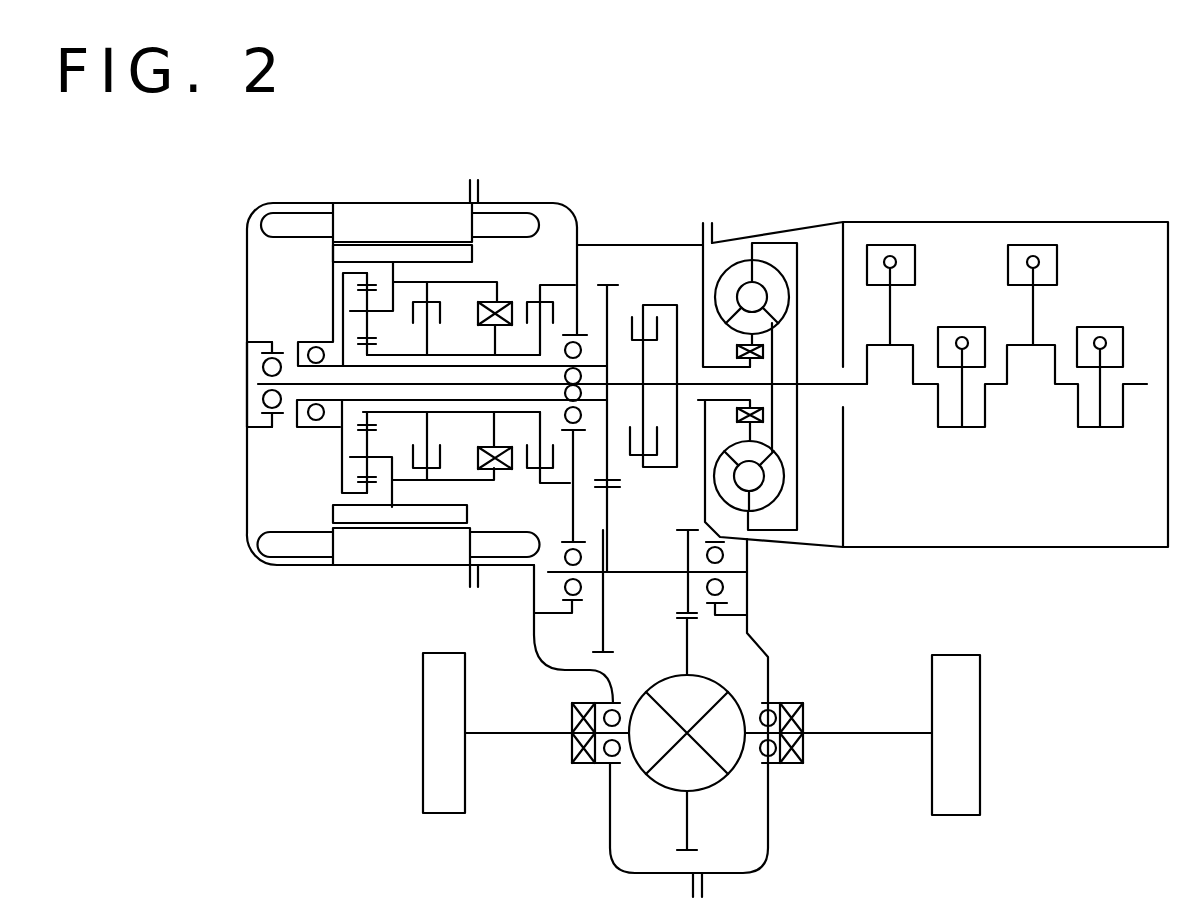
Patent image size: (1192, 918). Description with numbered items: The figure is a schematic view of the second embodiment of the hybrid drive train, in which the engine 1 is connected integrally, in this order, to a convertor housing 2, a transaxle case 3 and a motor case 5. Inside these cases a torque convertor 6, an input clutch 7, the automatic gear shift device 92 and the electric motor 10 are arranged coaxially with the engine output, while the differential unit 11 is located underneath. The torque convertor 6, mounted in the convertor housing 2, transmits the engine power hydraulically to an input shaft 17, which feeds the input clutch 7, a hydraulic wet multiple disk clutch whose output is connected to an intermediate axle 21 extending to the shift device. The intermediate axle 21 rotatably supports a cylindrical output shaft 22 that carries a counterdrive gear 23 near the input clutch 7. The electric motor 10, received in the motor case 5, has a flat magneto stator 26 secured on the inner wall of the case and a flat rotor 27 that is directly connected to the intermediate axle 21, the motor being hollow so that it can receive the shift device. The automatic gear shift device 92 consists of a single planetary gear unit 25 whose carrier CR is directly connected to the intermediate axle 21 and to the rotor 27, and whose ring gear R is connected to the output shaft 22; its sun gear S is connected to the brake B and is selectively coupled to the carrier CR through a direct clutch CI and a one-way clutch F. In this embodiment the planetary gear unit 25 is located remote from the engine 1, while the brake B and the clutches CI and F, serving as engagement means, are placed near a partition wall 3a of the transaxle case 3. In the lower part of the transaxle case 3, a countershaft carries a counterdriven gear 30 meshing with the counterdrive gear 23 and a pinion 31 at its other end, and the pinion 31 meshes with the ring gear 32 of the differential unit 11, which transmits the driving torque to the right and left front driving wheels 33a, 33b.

The engine 1 is at (1033, 210).
The convertor housing 2 is at (822, 226).
The transaxle case 3 is at (628, 244).
The partition wall 3a is at (565, 260).
The motor case 5 is at (294, 202).
The torque convertor 6 is at (735, 244).
The input clutch 7 is at (636, 313).
The automatic gear shift device 92 is at (542, 240).
The electric motor 10 is at (391, 192).
The differential unit 11 is at (745, 682).
The input shaft 17 is at (757, 388).
The intermediate axle 21 is at (312, 383).
The cylindrical output shaft 22 is at (330, 405).
The counterdrive gear 23 is at (608, 465).
The planetary gear unit 25 is at (312, 284).
The magneto stator 26 is at (351, 225).
The rotor 27 is at (439, 257).
The counterdriven gear 30 is at (600, 637).
The pinion 31 is at (687, 554).
The ring gear 32 is at (690, 835).
The front driving wheel 33a is at (433, 772).
The front driving wheel 33b is at (962, 777).
The sun gear S is at (373, 452).
The carrier CR is at (355, 425).
The ring gear R is at (355, 497).
The direct clutch CI is at (412, 485).
The one-way clutch F is at (503, 472).
The brake B is at (533, 480).